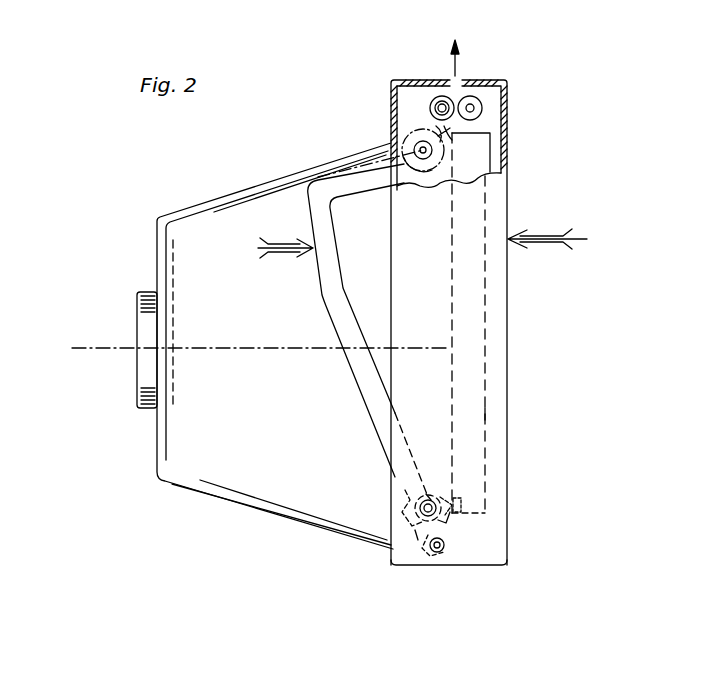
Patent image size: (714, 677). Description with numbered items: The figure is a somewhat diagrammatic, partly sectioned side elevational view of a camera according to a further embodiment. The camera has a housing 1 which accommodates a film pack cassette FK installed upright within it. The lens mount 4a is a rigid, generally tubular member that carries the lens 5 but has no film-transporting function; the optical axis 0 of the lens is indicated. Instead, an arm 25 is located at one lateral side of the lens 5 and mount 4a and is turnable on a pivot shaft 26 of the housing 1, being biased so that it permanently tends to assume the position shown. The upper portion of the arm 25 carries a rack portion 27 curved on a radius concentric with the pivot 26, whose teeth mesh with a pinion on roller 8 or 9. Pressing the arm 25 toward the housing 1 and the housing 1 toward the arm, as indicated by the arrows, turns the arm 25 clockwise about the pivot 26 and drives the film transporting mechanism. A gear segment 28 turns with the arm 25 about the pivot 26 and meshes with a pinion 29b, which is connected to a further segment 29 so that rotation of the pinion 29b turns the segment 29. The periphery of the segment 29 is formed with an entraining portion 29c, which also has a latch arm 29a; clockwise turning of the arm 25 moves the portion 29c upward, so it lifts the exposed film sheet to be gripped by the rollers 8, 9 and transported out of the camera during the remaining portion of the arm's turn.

The optical axis 0 is at (86, 347).
The housing 1 is at (508, 138).
The lens mount 4a is at (243, 482).
The lens 5 is at (140, 320).
The roller 8 is at (477, 98).
The roller 9 is at (440, 97).
The arm 25 is at (336, 286).
The pivot shaft 26 is at (443, 551).
The rack portion 27 is at (373, 170).
The gear segment 28 is at (412, 548).
The segment 29 is at (405, 522).
The latch arm 29a is at (441, 503).
The pinion 29b is at (428, 495).
The entraining portion 29c is at (455, 518).
The film pack cassette FK is at (487, 415).